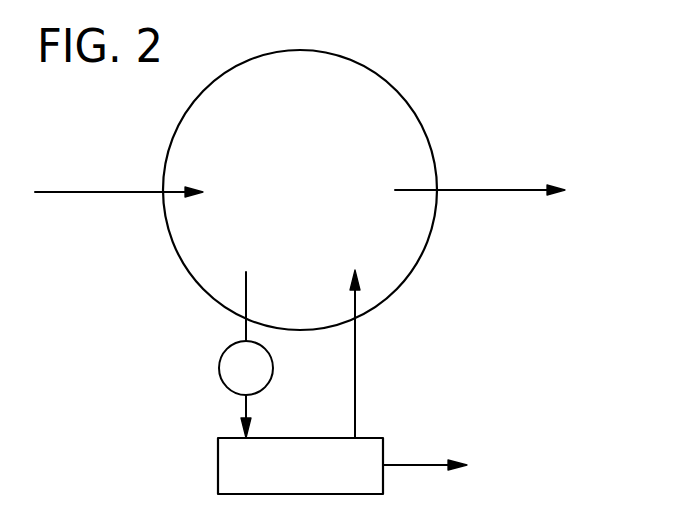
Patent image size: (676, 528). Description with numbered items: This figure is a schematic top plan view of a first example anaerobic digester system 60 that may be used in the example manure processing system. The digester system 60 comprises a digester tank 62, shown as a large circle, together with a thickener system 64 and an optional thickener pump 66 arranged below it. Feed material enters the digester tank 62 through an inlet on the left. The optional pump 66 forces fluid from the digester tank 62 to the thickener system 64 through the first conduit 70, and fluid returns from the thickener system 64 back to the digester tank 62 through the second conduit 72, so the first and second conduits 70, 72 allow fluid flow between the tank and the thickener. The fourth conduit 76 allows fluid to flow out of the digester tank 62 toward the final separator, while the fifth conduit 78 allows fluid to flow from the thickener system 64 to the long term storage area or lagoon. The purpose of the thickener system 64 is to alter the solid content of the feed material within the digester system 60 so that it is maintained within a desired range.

The anaerobic digester system 60 is at (115, 132).
The digester tank 62 is at (188, 260).
The thickener system 64 is at (230, 463).
The thickener pump 66 is at (225, 362).
The first conduit 70 is at (245, 408).
The second conduit 72 is at (355, 379).
The fourth conduit 76 is at (492, 192).
The fifth conduit 78 is at (417, 466).